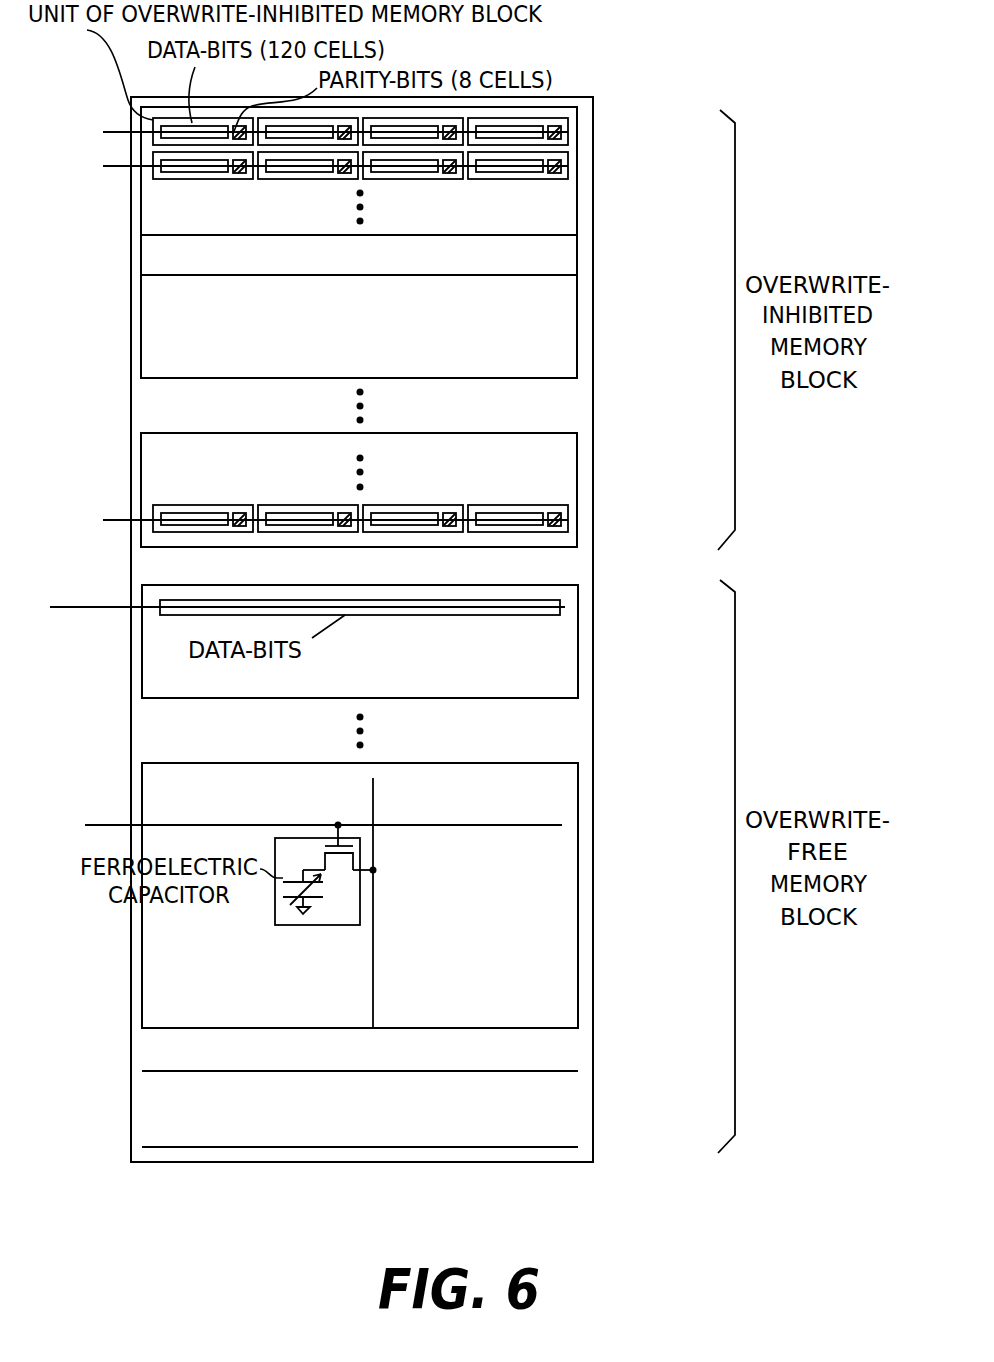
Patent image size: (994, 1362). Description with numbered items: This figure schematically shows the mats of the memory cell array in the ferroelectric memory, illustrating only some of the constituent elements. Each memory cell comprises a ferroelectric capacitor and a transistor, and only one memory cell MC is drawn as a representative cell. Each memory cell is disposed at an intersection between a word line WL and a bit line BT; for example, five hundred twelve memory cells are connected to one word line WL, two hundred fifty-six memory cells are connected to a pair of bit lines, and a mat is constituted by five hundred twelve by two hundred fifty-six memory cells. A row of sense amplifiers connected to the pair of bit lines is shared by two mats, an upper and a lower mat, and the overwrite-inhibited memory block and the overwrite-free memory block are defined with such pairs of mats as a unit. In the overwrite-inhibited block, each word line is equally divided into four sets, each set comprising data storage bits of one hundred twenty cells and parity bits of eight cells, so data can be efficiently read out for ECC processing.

The word line WL is at (298, 820).
The bit line BT is at (420, 903).
The memory cell MC is at (313, 927).